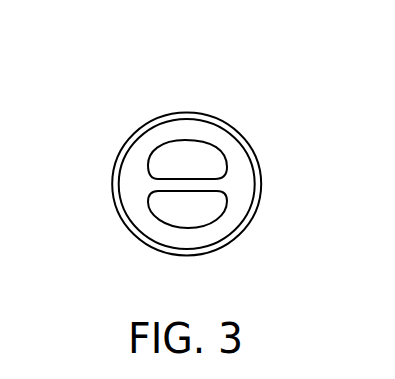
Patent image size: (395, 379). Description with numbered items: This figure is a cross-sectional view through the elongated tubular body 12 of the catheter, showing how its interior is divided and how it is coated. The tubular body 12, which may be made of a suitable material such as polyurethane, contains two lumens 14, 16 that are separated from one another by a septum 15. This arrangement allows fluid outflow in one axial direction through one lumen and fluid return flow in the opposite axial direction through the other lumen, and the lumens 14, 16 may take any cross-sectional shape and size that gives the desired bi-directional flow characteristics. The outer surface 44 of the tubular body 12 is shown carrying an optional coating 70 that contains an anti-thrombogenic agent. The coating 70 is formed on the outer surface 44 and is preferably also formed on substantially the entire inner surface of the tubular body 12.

The tubular body 12 is at (252, 82).
The lumen 14 is at (165, 169).
The septum 15 is at (188, 179).
The lumen 16 is at (164, 213).
The coating 70 is at (255, 153).
The outer surface 44 is at (243, 225).